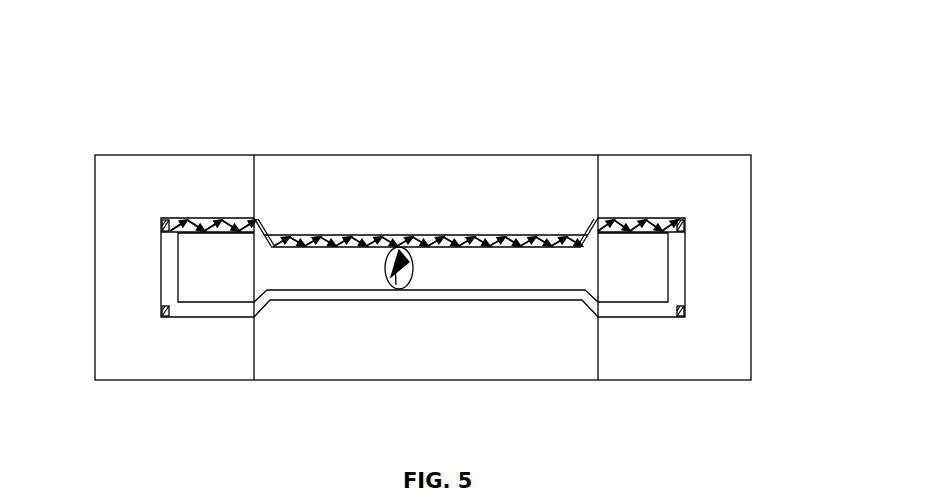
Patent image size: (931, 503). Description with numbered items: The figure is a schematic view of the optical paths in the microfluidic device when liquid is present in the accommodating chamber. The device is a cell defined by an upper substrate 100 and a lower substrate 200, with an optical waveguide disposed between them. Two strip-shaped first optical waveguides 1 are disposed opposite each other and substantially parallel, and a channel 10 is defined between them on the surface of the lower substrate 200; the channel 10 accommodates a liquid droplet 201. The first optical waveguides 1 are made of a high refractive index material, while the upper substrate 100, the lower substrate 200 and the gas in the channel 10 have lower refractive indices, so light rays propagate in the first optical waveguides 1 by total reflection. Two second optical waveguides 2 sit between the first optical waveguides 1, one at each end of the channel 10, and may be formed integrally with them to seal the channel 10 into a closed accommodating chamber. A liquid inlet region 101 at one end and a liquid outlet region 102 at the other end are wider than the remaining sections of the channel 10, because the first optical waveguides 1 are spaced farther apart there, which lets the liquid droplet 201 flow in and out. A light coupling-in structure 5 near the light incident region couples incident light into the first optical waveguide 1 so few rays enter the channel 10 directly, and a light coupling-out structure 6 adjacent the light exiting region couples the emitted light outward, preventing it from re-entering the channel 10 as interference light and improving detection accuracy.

The first optical waveguide 1 is at (458, 235).
The second optical waveguide 2 is at (168, 279).
The light coupling-in structure 5 is at (163, 221).
The light coupling-out structure 6 is at (691, 222).
The channel 10 is at (343, 277).
The upper substrate 100 is at (548, 195).
The liquid inlet region 101 is at (210, 268).
The liquid outlet region 102 is at (633, 268).
The lower substrate 200 is at (700, 210).
The liquid droplet 201 is at (397, 290).